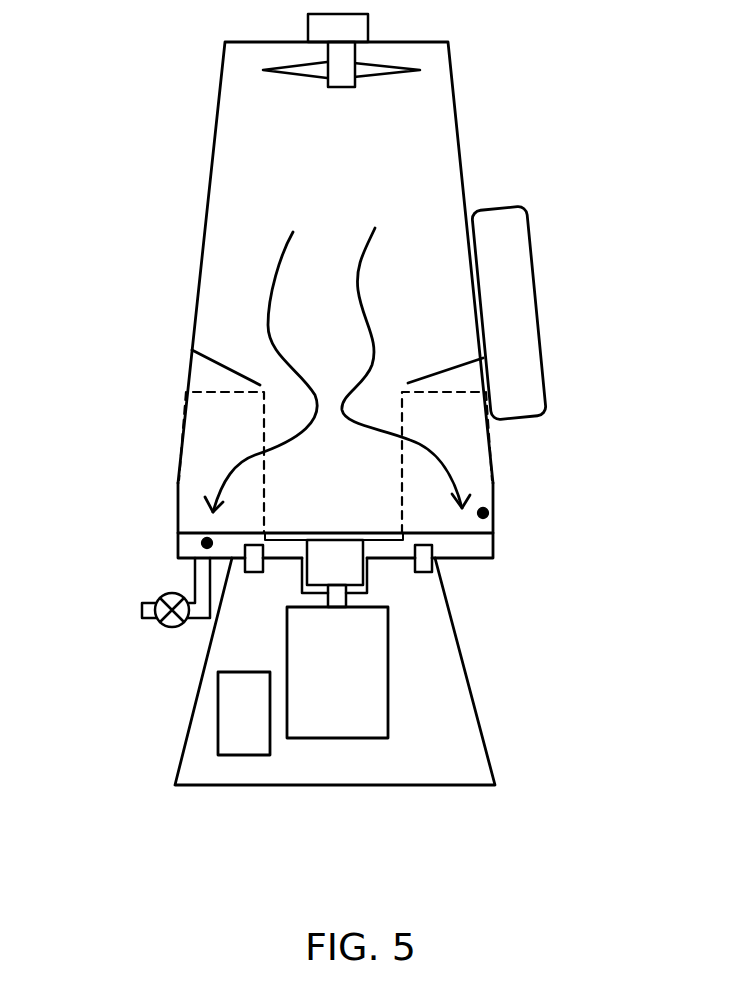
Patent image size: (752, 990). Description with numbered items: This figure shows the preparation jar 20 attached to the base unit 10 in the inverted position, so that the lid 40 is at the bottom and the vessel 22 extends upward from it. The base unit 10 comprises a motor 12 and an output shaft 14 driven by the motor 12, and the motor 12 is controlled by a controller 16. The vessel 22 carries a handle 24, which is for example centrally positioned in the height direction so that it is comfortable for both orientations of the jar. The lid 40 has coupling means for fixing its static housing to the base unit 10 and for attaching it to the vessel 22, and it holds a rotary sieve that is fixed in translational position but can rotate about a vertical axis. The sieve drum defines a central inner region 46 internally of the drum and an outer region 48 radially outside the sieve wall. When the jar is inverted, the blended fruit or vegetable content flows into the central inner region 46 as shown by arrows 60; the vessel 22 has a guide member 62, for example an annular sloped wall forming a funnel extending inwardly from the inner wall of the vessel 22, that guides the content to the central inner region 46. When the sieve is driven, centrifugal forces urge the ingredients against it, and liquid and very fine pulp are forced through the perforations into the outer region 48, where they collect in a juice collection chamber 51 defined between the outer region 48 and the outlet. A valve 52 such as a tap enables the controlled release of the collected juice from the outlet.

The base unit 10 is at (487, 611).
The motor 12 is at (388, 687).
The output shaft 14 is at (348, 598).
The controller 16 is at (215, 708).
The preparation jar 20 is at (177, 167).
The vessel 22 is at (455, 92).
The handle 24 is at (537, 298).
The lid 40 is at (163, 510).
The central inner region 46 is at (367, 494).
The outer region 48 is at (483, 513).
The juice collection chamber 51 is at (207, 543).
The valve 52 is at (157, 598).
The arrows 60 is at (362, 262).
The guide member 62 is at (228, 367).